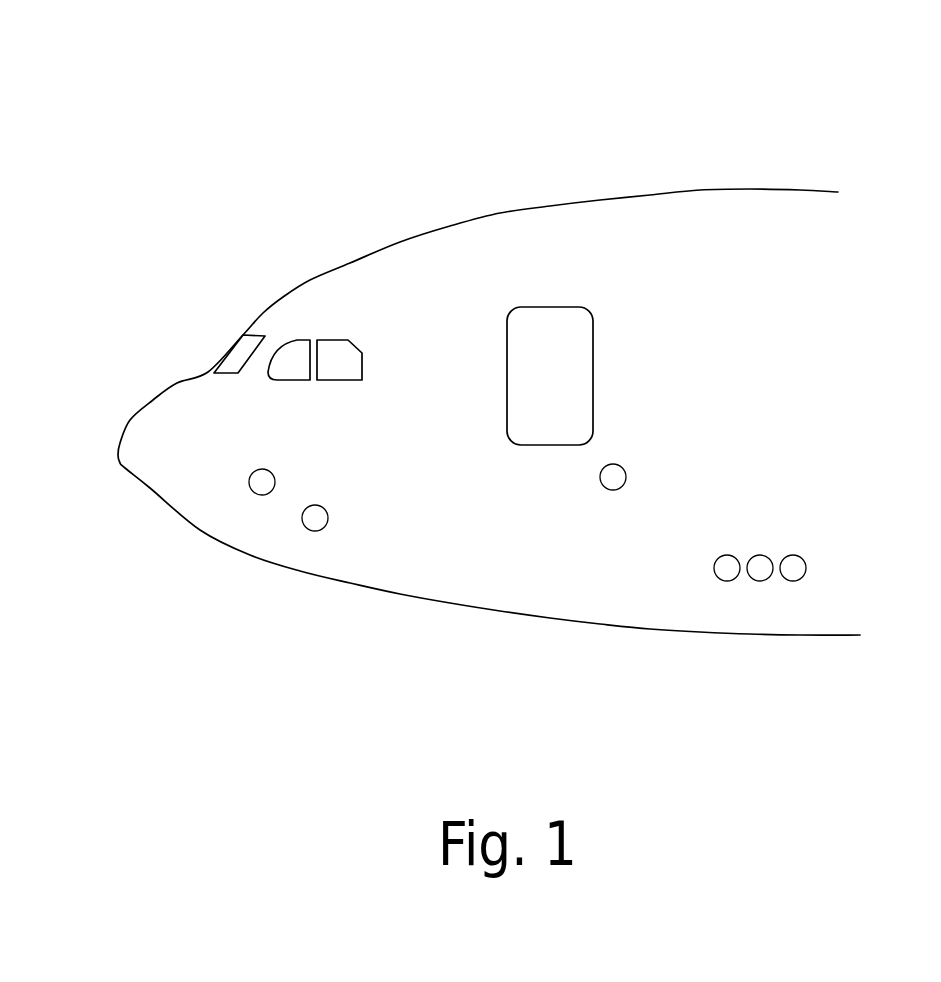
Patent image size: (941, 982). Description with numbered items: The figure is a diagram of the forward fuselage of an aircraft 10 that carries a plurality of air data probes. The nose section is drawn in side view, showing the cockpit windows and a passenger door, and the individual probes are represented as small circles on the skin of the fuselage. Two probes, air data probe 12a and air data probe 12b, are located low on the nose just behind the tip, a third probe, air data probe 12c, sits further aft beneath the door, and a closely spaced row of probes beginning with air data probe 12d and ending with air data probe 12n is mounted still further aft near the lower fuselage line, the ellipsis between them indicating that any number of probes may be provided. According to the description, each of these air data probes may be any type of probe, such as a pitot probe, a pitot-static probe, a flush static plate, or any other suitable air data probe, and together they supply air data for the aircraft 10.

The aircraft 10 is at (489, 337).
The air data probe 12a is at (310, 531).
The air data probe 12b is at (268, 470).
The air data probe 12c is at (613, 490).
The air data probe 12d is at (727, 581).
The air data probe 12n is at (793, 581).